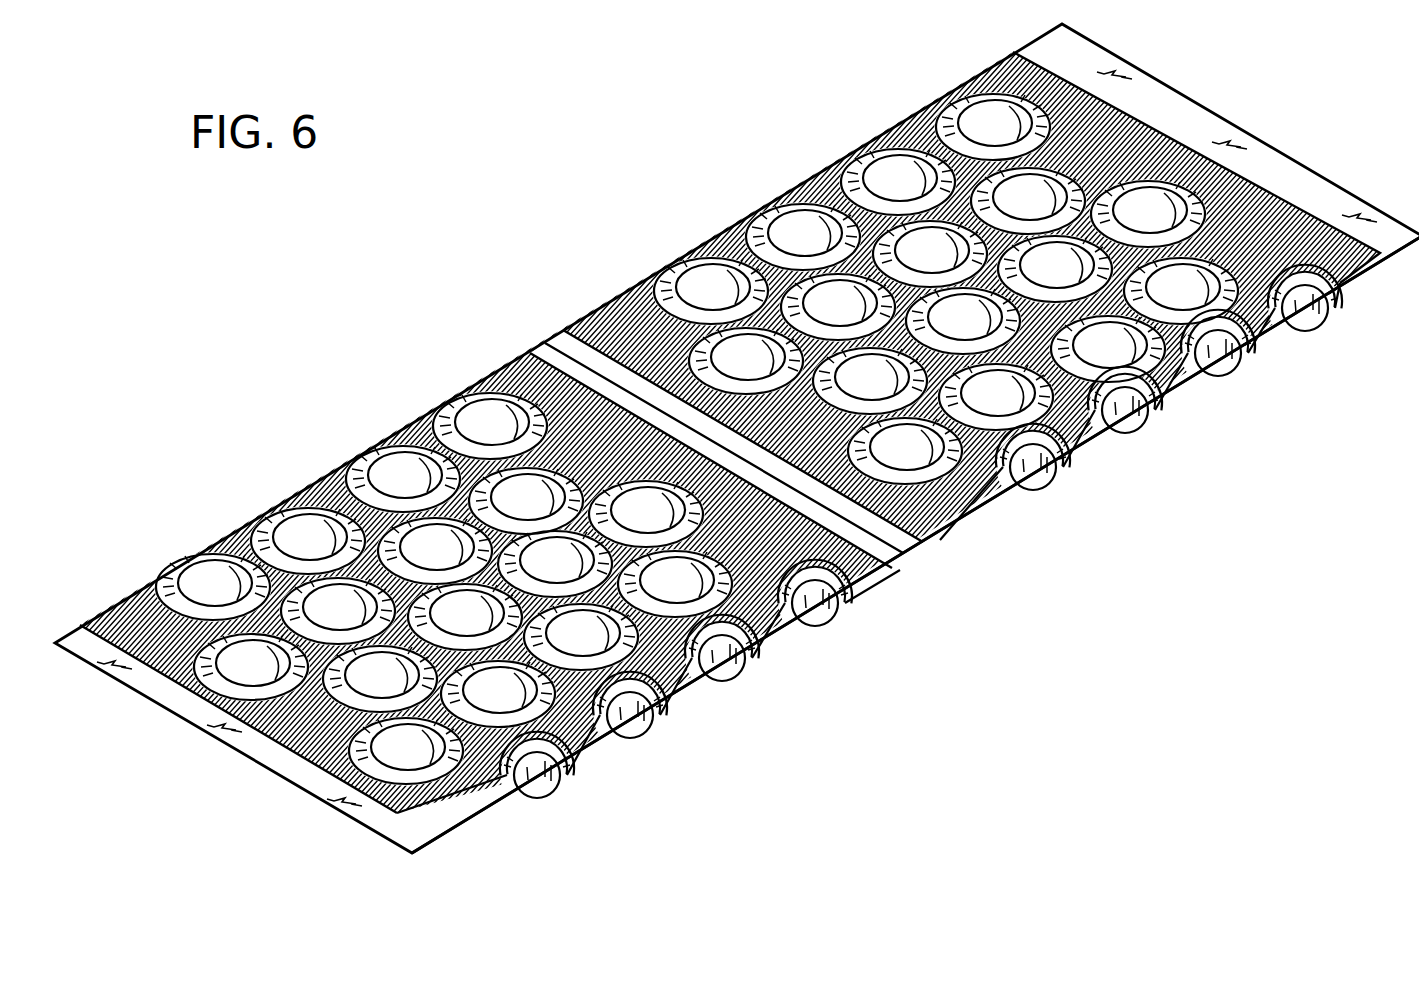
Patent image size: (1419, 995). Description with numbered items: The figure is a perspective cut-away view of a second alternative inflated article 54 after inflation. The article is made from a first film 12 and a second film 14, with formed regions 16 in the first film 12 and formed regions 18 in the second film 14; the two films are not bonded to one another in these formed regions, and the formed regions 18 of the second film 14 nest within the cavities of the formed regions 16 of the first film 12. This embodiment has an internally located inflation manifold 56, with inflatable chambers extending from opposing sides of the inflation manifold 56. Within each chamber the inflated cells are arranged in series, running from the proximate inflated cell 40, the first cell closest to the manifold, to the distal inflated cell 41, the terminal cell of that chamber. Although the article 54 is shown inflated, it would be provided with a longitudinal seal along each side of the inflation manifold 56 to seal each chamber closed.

The first film 12 is at (142, 605).
The second film 14 is at (450, 837).
The formed regions in first film 16 is at (400, 470).
The formed regions in second film 18 is at (640, 740).
The proximate inflated cell 40 is at (885, 390).
The distal inflated cell 41 is at (1196, 300).
The second alternative inflated article 54 is at (518, 198).
The inflation manifold 56 is at (915, 553).